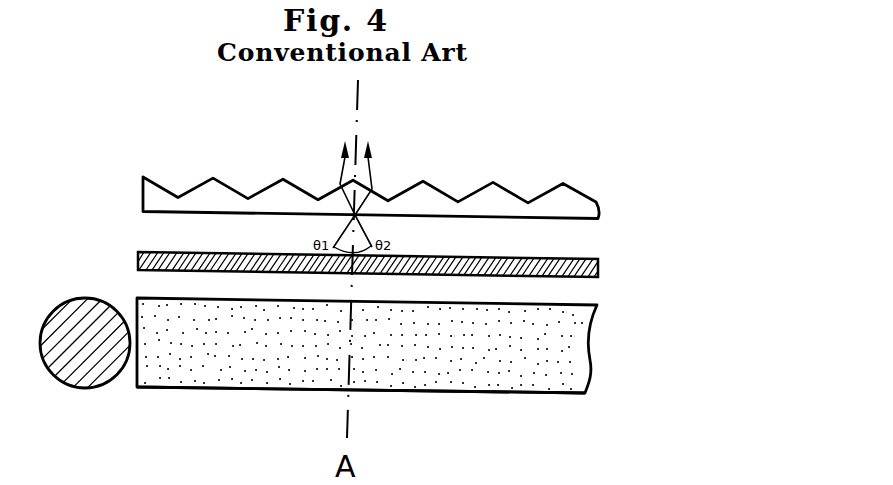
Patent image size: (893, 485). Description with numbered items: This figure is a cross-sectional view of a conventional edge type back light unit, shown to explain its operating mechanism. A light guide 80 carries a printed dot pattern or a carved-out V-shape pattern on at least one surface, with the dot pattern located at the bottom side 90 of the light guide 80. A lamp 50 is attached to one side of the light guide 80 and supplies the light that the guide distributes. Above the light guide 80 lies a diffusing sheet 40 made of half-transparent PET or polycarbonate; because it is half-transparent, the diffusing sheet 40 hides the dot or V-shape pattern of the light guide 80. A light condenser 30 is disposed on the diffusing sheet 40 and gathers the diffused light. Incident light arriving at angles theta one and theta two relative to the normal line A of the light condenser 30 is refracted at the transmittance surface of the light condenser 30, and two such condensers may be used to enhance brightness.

The light condenser 30 is at (557, 185).
The diffusing sheet 40 is at (600, 263).
The lamp 50 is at (62, 309).
The light guide 80 is at (515, 395).
The bottom side 90 is at (192, 389).